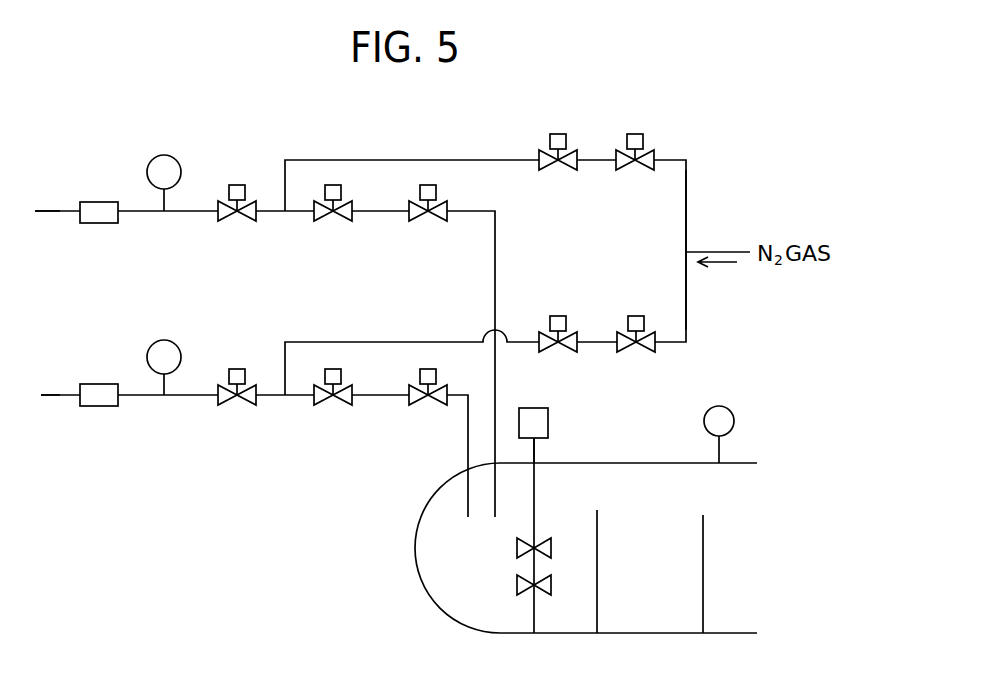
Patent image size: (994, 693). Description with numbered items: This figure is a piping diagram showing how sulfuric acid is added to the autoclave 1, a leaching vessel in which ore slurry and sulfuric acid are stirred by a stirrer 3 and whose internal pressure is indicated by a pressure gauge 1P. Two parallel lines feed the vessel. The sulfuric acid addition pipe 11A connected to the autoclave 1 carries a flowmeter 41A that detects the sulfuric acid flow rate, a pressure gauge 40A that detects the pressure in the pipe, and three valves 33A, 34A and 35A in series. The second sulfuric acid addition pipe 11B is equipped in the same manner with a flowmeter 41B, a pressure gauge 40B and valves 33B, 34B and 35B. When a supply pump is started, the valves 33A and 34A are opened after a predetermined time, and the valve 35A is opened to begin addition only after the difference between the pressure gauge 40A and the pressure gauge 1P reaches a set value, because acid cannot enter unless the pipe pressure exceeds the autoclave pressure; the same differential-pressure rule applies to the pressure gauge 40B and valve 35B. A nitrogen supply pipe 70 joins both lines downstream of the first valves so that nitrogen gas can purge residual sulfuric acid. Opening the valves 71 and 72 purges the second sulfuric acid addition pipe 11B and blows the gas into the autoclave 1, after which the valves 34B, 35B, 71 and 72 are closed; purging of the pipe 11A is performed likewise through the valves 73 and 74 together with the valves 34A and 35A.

The autoclave 1 is at (441, 594).
The pressure gauge 1P is at (734, 421).
The stirrer 3 is at (548, 421).
The sulfuric acid addition pipe 11A is at (53, 212).
The second sulfuric acid addition pipe 11B is at (53, 396).
The valve 33A is at (233, 222).
The valve 33B is at (233, 406).
The valve 34A is at (330, 222).
The valve 34B is at (330, 406).
The valve 35A is at (426, 222).
The valve 35B is at (426, 406).
The pressure gauge 40A is at (165, 155).
The pressure gauge 40B is at (165, 340).
The flowmeter 41A is at (98, 202).
The flowmeter 41B is at (98, 384).
The nitrogen supply pipe 70 is at (688, 191).
The valve 71 is at (560, 315).
The valve 72 is at (638, 315).
The valve 73 is at (560, 133).
The valve 74 is at (637, 133).